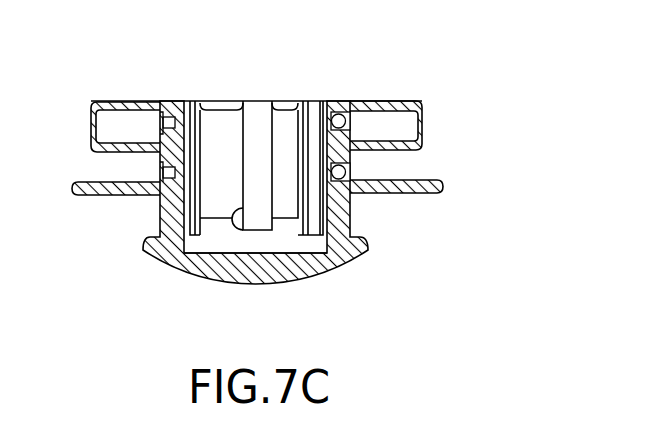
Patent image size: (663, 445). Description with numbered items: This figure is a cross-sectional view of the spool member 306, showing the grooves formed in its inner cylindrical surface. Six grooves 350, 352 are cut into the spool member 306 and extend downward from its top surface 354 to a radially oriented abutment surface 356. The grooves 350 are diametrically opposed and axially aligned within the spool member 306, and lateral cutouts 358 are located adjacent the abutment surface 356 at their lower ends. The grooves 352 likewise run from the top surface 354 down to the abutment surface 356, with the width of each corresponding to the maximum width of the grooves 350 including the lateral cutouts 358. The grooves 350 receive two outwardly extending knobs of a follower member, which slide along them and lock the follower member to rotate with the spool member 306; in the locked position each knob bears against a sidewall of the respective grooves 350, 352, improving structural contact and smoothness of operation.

The spool member 306 is at (433, 262).
The grooves 350 is at (259, 108).
The grooves 352 is at (320, 107).
The top surface 354 is at (387, 106).
The abutment surface 356 is at (283, 237).
The lateral cutouts 358 is at (237, 221).